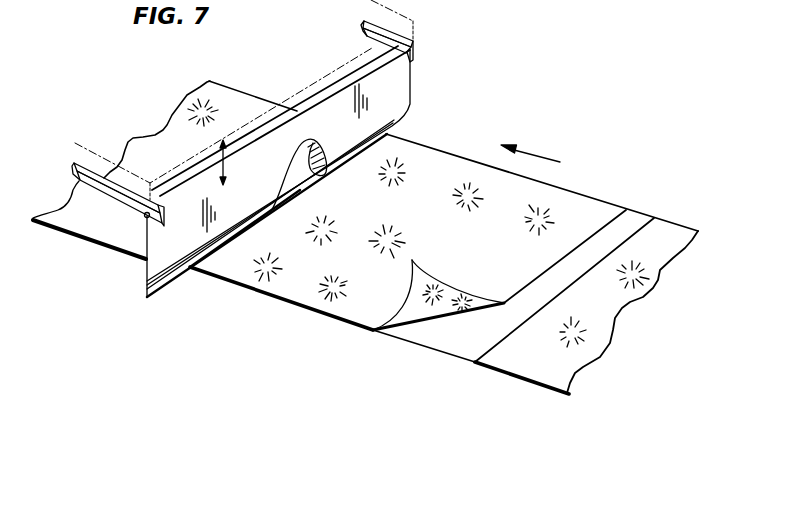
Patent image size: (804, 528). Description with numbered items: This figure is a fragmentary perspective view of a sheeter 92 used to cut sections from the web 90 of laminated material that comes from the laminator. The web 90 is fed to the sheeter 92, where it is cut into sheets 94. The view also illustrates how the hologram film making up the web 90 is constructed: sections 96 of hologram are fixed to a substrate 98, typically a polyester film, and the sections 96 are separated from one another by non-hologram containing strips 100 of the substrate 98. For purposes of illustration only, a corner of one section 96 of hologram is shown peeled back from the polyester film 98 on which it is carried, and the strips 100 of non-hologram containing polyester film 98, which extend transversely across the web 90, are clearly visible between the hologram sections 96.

The web of laminated material 90 is at (298, 310).
The sheeter 92 is at (411, 83).
The sheets 94 is at (101, 228).
The section of hologram 96 is at (423, 306).
The substrate 98 is at (452, 345).
The non-hologram containing strips 100 is at (198, 268).